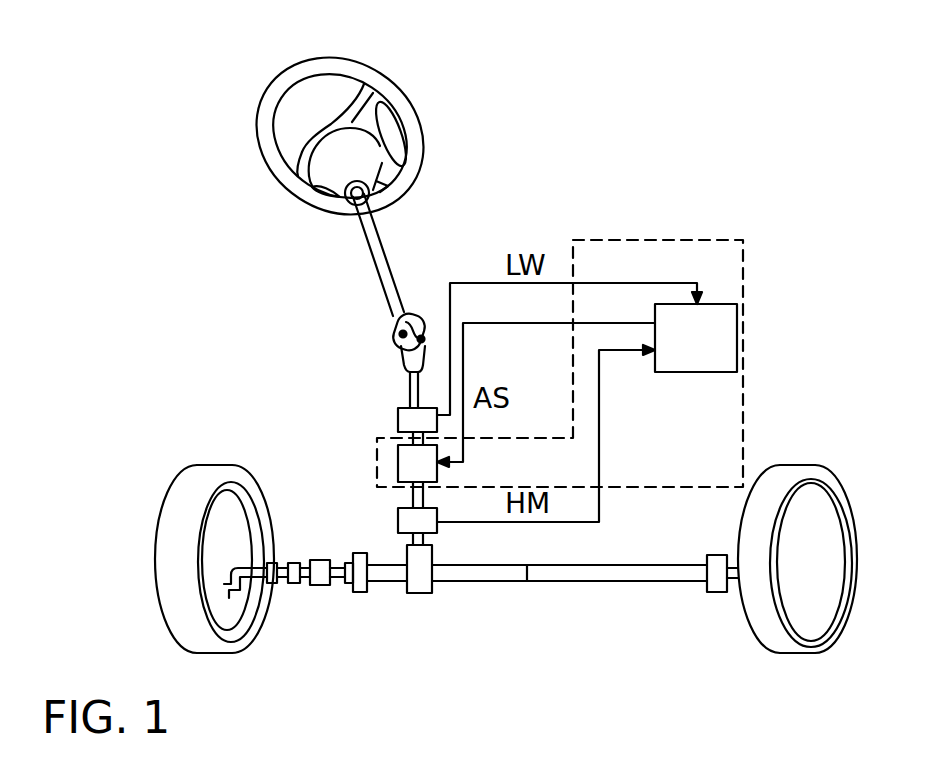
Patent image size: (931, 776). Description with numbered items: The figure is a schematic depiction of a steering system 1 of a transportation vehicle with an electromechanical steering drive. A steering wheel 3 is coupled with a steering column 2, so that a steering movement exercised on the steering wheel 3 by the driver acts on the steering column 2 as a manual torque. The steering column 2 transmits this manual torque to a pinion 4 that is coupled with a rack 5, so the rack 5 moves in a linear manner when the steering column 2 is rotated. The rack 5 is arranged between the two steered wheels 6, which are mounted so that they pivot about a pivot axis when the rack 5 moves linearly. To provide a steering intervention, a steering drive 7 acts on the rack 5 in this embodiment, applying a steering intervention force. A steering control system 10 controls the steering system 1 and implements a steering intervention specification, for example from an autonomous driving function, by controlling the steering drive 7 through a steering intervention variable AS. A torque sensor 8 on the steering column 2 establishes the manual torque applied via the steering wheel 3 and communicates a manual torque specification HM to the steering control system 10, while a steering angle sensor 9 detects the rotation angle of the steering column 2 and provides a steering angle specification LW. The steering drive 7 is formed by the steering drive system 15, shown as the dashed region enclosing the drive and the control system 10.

The steering system 1 is at (686, 123).
The steering column 2 is at (383, 275).
The steering wheel 3 is at (267, 112).
The pinion 4 is at (418, 583).
The rack 5 is at (475, 572).
The steered wheels 6 is at (183, 510).
The steering drive 7 is at (413, 458).
The torque sensor 8 is at (413, 525).
The steering angle sensor 9 is at (413, 420).
The steering control system 10 is at (719, 317).
The steering drive system 15 is at (743, 395).